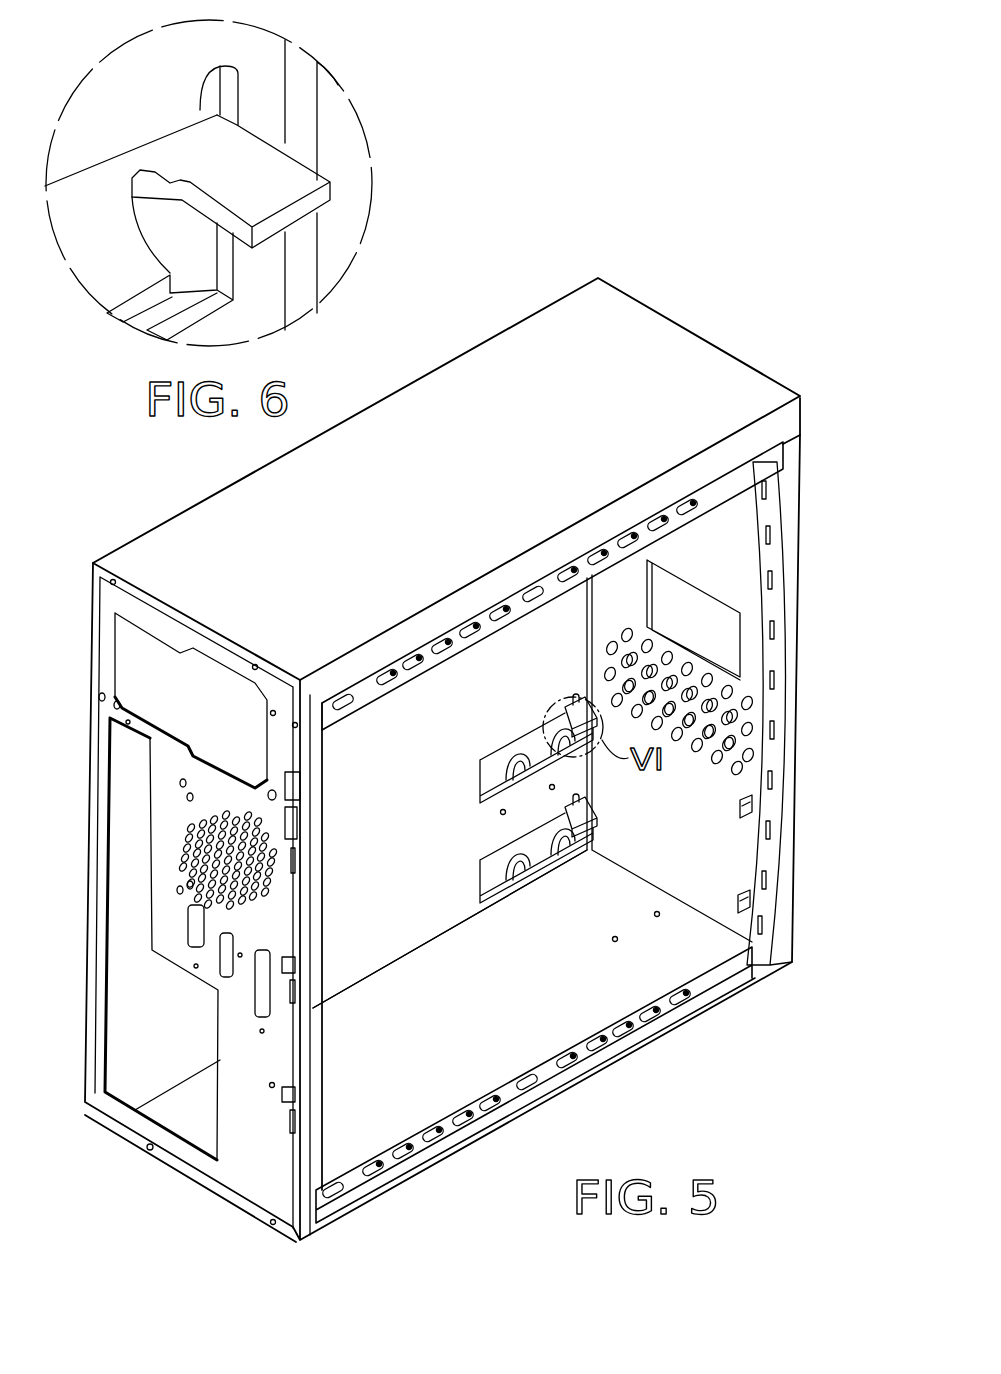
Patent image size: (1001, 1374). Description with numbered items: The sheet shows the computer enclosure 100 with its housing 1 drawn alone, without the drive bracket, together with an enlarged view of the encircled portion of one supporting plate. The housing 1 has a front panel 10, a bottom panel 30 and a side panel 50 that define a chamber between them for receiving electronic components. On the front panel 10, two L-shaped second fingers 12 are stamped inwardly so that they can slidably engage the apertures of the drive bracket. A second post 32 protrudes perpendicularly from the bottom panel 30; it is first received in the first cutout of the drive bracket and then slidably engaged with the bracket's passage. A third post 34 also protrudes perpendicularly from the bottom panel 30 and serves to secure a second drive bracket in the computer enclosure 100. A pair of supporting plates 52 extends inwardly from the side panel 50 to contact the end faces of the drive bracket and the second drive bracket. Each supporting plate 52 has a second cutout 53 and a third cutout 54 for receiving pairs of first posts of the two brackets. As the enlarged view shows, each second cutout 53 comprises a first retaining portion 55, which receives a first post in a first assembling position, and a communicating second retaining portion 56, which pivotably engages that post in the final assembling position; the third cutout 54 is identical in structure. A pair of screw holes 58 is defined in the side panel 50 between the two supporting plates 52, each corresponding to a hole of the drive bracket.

In FIG. 5, the housing 1 is at (663, 308).
In FIG. 5, the computer enclosure 100 is at (842, 311).
In FIG. 5, the front panel 10 is at (743, 760).
In FIG. 5, the second fingers 12 is at (752, 812).
In FIG. 5, the bottom panel 30 is at (390, 1098).
In FIG. 5, the second post 32 is at (660, 914).
In FIG. 5, the third post 34 is at (617, 940).
In FIG. 5, the side panel 50 is at (547, 627).
In FIG. 5, the supporting plates 52 is at (490, 762).
In FIG. 6, the supporting plates 52 is at (110, 248).
In FIG. 5, the second cutout 53 is at (567, 718).
In FIG. 6, the second cutout 53 is at (182, 233).
In FIG. 5, the third cutout 54 is at (530, 762).
In FIG. 6, the first retaining portion 55 is at (200, 178).
In FIG. 6, the second retaining portion 56 is at (205, 117).
In FIG. 5, the screw holes 58 is at (557, 788).